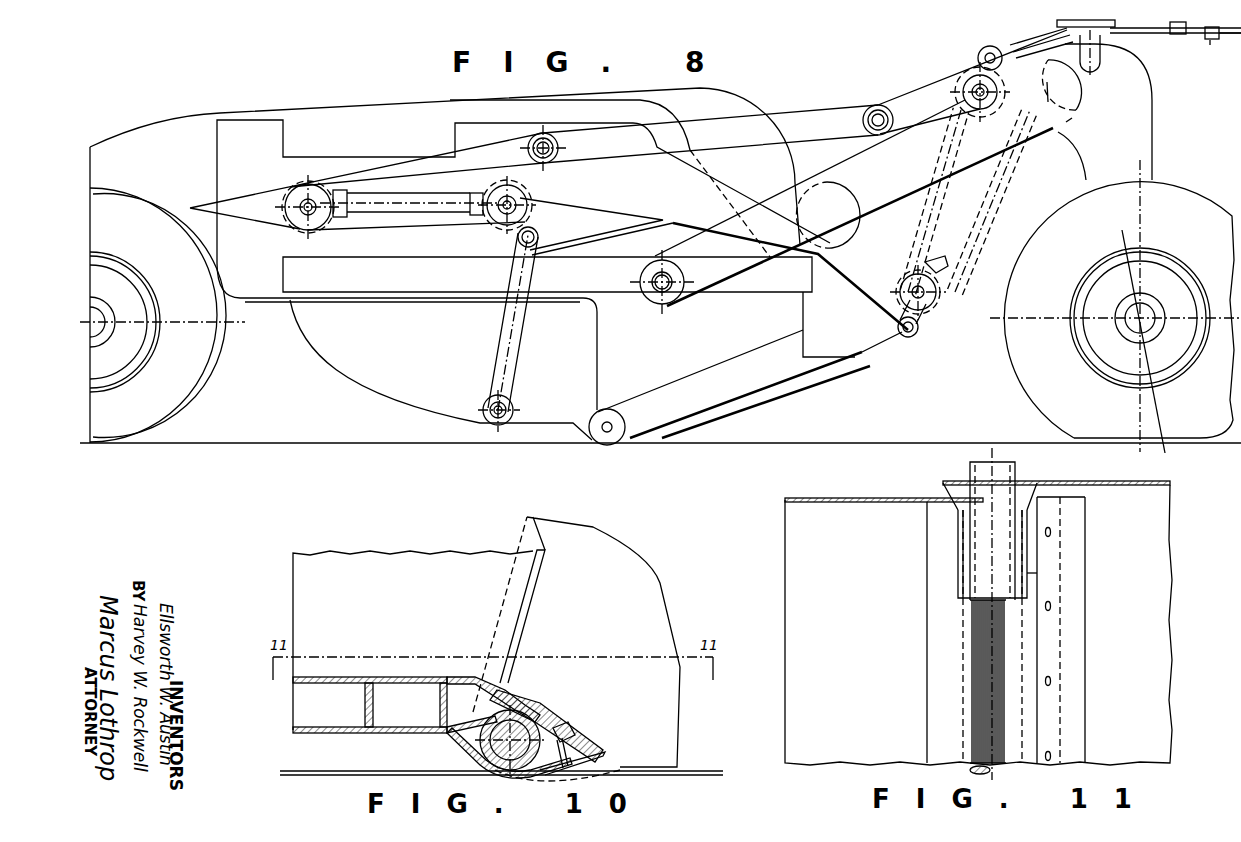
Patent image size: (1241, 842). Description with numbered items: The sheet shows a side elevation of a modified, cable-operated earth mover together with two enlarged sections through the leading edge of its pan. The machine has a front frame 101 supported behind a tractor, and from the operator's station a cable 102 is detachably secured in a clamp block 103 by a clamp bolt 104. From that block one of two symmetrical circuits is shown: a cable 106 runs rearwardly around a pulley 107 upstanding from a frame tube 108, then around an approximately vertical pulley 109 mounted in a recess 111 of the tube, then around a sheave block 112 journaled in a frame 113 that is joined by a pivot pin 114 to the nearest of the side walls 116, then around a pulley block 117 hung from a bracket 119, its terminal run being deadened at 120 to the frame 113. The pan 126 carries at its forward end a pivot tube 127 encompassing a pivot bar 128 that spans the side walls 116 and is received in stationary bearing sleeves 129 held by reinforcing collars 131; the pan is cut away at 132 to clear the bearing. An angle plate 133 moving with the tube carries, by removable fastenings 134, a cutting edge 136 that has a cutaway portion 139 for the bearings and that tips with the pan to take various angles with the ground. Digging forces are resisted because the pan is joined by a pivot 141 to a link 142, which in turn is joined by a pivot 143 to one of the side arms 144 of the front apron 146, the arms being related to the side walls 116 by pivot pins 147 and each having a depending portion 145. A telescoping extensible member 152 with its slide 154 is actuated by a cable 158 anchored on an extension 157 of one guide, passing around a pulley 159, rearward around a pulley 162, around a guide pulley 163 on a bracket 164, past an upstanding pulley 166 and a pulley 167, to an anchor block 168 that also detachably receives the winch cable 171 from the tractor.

In FIG. 8, the front frame 101 is at (1018, 148).
In FIG. 8, the cable 102 is at (1230, 47).
In FIG. 8, the clamp block 103 is at (1216, 58).
In FIG. 8, the clamp bolt 104 is at (1214, 40).
In FIG. 8, the cable 106 is at (975, 197).
In FIG. 8, the pulley 107 is at (1082, 135).
In FIG. 8, the frame tube 108 is at (1072, 118).
In FIG. 8, the pulley 109 is at (1020, 45).
In FIG. 8, the recess 111 is at (1020, 105).
In FIG. 8, the sheave block 112 is at (938, 293).
In FIG. 8, the frame 113 is at (930, 258).
In FIG. 8, the pivot pin 114 is at (916, 334).
In FIG. 8, the side walls 116 is at (396, 107).
In FIG. 10, the side walls 116 is at (676, 586).
In FIG. 11, the side walls 116 is at (1082, 480).
In FIG. 8, the pulley block 117 is at (963, 86).
In FIG. 8, the bracket 119 is at (978, 55).
In FIG. 8, the dead end 120 is at (944, 268).
In FIG. 8, the pan 126 is at (379, 415).
In FIG. 10, the pan 126 is at (395, 677).
In FIG. 11, the pan 126 is at (848, 760).
In FIG. 10, the pivot tube 127 is at (530, 710).
In FIG. 8, the pivot bar 128 is at (620, 422).
In FIG. 10, the pivot bar 128 is at (480, 750).
In FIG. 11, the pivot bar 128 is at (1012, 766).
In FIG. 11, the bearing sleeves 129 is at (966, 534).
In FIG. 10, the reinforcing collars 131 is at (566, 724).
In FIG. 11, the reinforcing collars 131 is at (1025, 492).
In FIG. 11, the cutaway portion 132 is at (958, 576).
In FIG. 10, the angle plate 133 is at (468, 678).
In FIG. 11, the angle plate 133 is at (927, 660).
In FIG. 10, the removable fastenings 134 is at (560, 768).
In FIG. 11, the removable fastenings 134 is at (1052, 682).
In FIG. 10, the cutting edge 136 is at (588, 752).
In FIG. 11, the cutting edge 136 is at (1088, 642).
In FIG. 11, the cutaway portion 139 is at (1030, 573).
In FIG. 8, the pivot 141 is at (488, 402).
In FIG. 8, the link 142 is at (496, 349).
In FIG. 8, the pivot 143 is at (518, 246).
In FIG. 8, the side arms 144 is at (715, 168).
In FIG. 8, the depending portion 145 is at (615, 226).
In FIG. 8, the front apron 146 is at (846, 262).
In FIG. 8, the pivot pins 147 is at (553, 141).
In FIG. 8, the telescoping extensible member 152 is at (392, 215).
In FIG. 8, the slide 154 is at (458, 228).
In FIG. 8, the extension 157 is at (340, 190).
In FIG. 8, the actuating cable 158 is at (375, 192).
In FIG. 8, the pulley 159 is at (532, 205).
In FIG. 8, the pulley 162 is at (288, 226).
In FIG. 8, the guide pulley 163 is at (877, 106).
In FIG. 8, the bracket 164 is at (862, 143).
In FIG. 8, the pulley 166 is at (1055, 85).
In FIG. 8, the pulley 167 is at (1103, 56).
In FIG. 8, the anchor block 168 is at (1175, 45).
In FIG. 8, the actuating cable 171 is at (1179, 42).